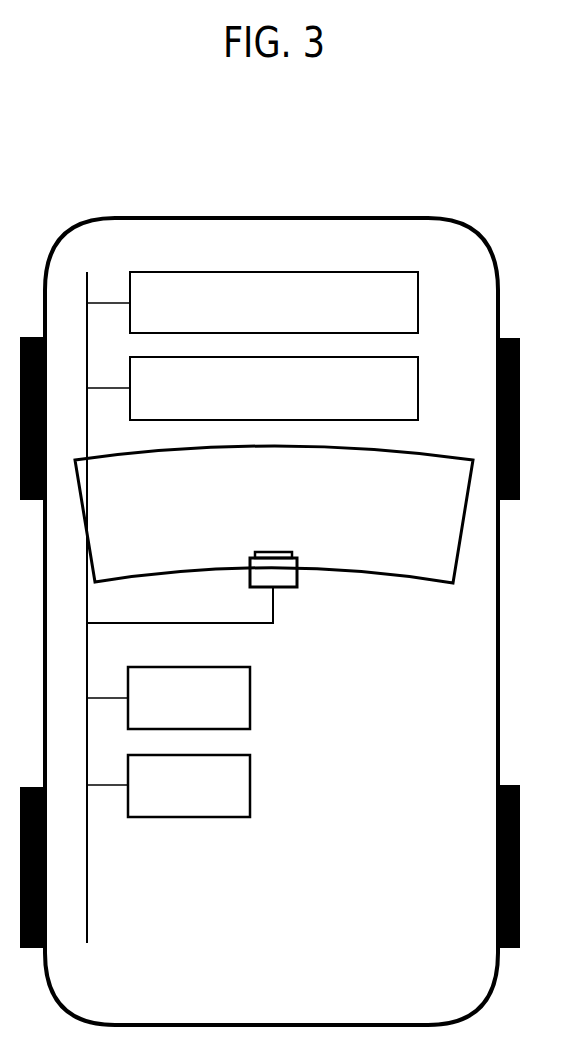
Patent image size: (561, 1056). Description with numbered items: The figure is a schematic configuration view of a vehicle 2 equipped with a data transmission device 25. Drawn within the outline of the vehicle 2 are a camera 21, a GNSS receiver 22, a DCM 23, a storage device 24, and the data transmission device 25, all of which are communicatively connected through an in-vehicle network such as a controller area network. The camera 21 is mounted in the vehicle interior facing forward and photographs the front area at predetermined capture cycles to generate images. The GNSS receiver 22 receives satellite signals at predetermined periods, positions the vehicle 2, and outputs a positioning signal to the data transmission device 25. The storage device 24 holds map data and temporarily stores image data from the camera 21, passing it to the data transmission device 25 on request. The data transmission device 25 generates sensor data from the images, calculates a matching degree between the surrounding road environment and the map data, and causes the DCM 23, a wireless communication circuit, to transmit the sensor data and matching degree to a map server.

The vehicle 2 is at (400, 213).
The camera 21 is at (292, 562).
The GNSS receiver 22 is at (250, 712).
The DCM (data communication module) 23 is at (250, 800).
The storage device 24 is at (418, 322).
The data transmission device 25 is at (418, 408).